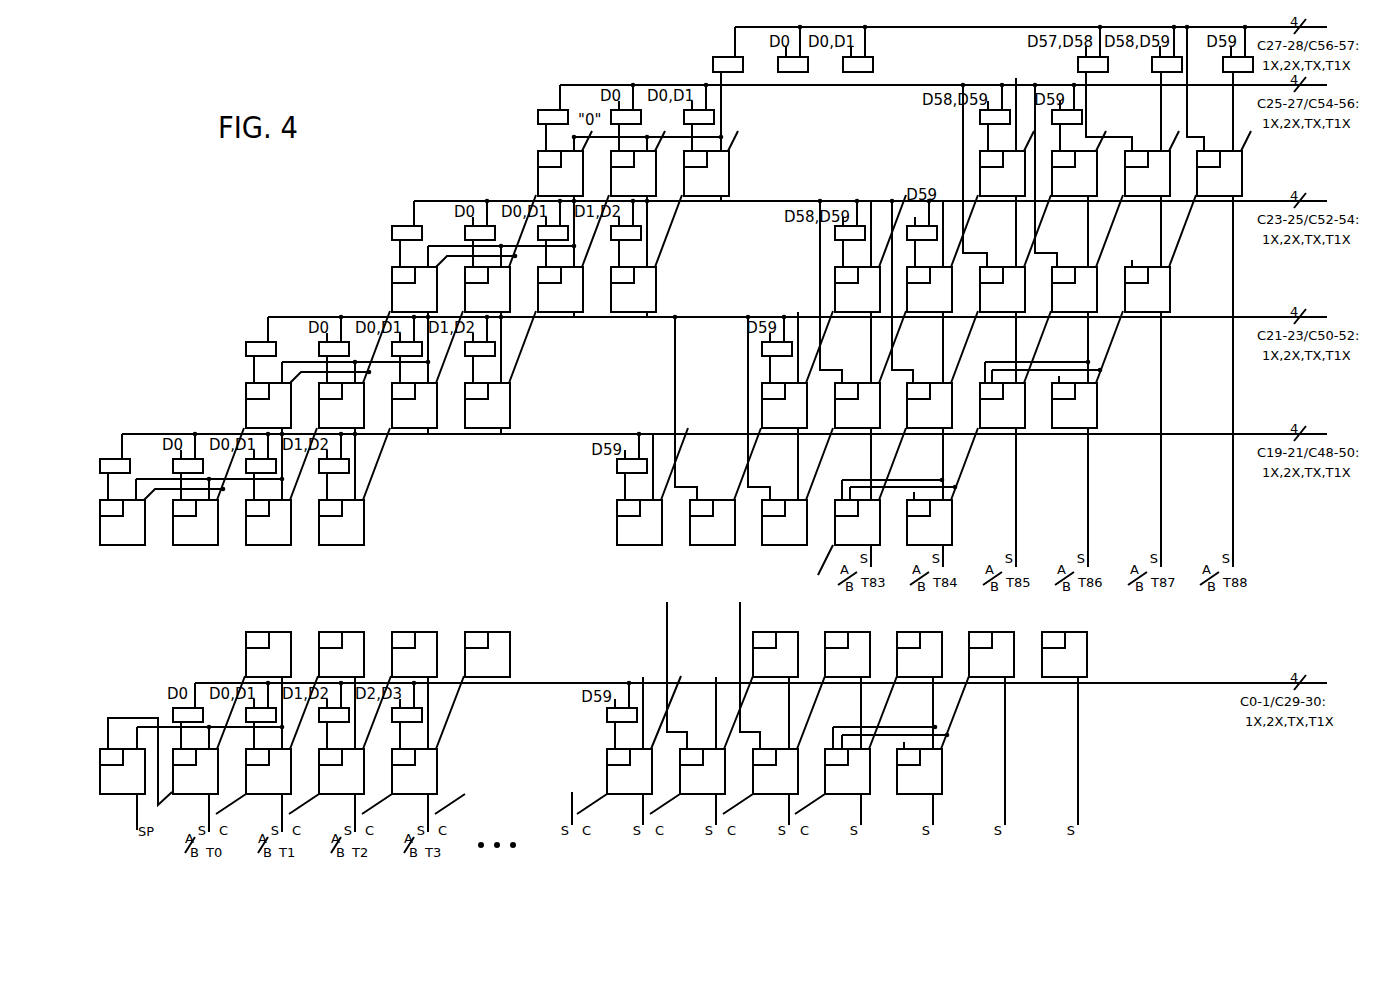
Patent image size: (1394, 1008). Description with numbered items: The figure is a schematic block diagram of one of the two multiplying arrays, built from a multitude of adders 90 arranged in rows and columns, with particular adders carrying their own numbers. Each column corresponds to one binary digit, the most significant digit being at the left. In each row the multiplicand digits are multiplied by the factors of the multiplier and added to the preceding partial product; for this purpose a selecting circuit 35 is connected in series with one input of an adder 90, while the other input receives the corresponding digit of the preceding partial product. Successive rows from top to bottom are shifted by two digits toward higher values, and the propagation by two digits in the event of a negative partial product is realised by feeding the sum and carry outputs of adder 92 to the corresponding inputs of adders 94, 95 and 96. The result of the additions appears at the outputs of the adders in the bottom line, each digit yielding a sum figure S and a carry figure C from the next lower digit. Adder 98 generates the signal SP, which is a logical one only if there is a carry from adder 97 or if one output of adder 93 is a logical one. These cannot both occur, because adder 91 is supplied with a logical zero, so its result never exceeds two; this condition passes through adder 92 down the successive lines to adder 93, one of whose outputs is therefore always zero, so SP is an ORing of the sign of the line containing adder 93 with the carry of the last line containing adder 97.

The selecting circuit 35 is at (845, 233).
The adder 90 is at (1125, 372).
The adder 91 is at (543, 188).
The adder 92 is at (408, 300).
The adder 93 is at (250, 660).
The adder 94 is at (420, 417).
The adder 95 is at (353, 417).
The adder 96 is at (256, 415).
The adder 97 is at (190, 794).
The adder 98 is at (115, 794).